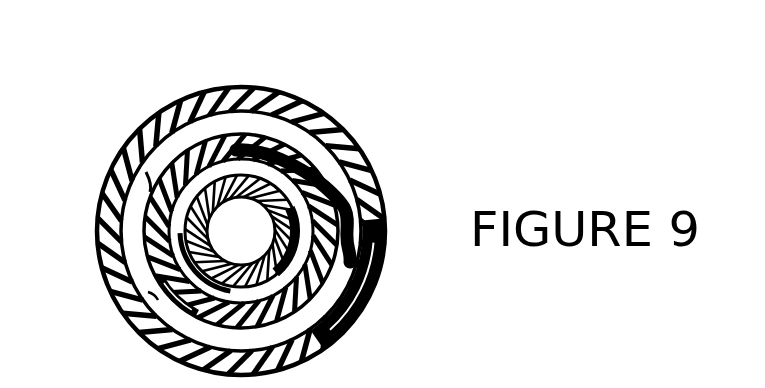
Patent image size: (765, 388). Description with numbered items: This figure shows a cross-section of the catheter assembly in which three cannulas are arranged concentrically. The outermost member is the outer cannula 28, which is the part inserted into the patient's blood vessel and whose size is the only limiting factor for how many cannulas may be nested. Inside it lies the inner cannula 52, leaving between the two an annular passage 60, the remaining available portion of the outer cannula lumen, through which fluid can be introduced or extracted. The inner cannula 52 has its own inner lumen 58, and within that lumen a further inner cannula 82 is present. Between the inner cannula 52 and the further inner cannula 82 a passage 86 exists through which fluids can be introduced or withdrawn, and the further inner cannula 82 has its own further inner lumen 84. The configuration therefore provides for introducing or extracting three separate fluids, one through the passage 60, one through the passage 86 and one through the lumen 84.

The outer cannula 28 is at (398, 208).
The inner cannula 52 is at (348, 132).
The inner lumen 58 is at (293, 147).
The annular passage 60 is at (146, 172).
The further inner cannula 82 is at (324, 229).
The further inner lumen 84 is at (223, 245).
The passage 86 is at (148, 292).